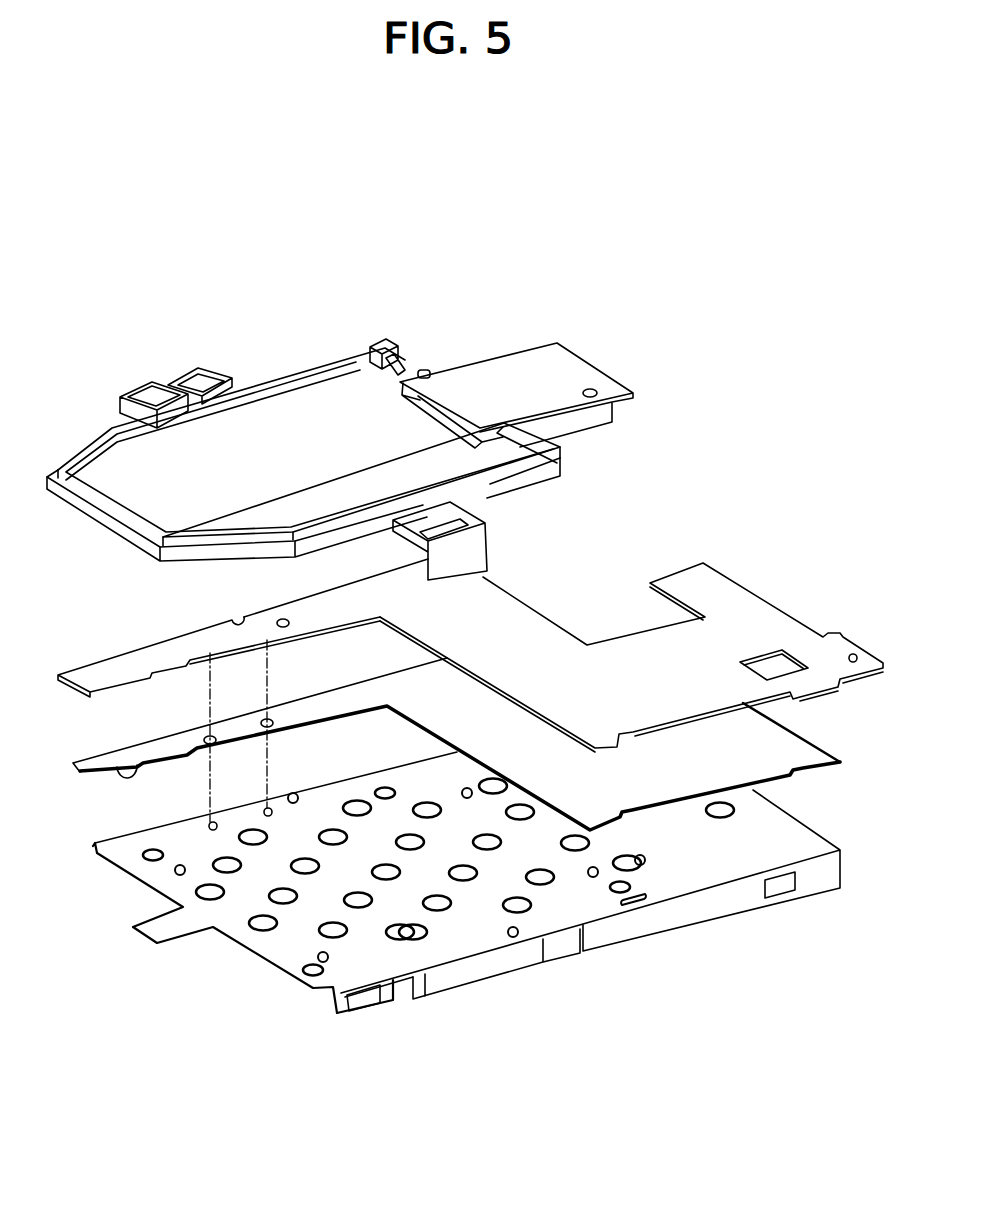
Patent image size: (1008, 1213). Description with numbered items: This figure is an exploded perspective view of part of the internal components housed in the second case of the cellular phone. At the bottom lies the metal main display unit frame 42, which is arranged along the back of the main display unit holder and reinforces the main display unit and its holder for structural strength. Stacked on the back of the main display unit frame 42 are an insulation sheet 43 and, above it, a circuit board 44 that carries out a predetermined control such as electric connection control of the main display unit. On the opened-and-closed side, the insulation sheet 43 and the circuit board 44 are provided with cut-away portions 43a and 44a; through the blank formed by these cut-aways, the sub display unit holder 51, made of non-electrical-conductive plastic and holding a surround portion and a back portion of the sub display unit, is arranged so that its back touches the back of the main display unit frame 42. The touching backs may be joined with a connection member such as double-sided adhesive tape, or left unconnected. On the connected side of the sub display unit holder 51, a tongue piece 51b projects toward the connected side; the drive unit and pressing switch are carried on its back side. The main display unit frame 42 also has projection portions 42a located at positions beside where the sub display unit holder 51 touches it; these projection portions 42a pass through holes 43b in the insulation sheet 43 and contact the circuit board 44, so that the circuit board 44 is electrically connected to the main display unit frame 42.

The sub display unit holder 51 is at (310, 377).
The tongue piece 51b is at (505, 382).
The circuit board 44 is at (758, 617).
The cut-away portion 44a is at (224, 660).
The insulation sheet 43 is at (790, 748).
The cut-away portion 43a is at (117, 772).
The holes 43b is at (267, 719).
The main display unit frame 42 is at (787, 832).
The projection portions 42a is at (267, 809).